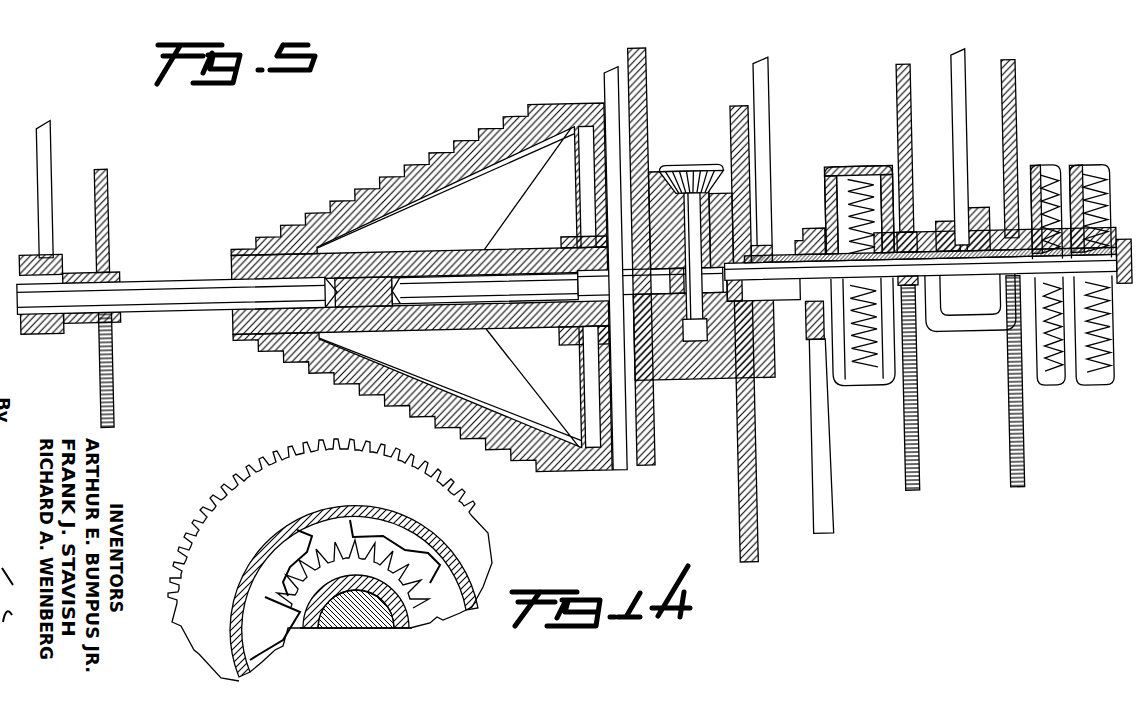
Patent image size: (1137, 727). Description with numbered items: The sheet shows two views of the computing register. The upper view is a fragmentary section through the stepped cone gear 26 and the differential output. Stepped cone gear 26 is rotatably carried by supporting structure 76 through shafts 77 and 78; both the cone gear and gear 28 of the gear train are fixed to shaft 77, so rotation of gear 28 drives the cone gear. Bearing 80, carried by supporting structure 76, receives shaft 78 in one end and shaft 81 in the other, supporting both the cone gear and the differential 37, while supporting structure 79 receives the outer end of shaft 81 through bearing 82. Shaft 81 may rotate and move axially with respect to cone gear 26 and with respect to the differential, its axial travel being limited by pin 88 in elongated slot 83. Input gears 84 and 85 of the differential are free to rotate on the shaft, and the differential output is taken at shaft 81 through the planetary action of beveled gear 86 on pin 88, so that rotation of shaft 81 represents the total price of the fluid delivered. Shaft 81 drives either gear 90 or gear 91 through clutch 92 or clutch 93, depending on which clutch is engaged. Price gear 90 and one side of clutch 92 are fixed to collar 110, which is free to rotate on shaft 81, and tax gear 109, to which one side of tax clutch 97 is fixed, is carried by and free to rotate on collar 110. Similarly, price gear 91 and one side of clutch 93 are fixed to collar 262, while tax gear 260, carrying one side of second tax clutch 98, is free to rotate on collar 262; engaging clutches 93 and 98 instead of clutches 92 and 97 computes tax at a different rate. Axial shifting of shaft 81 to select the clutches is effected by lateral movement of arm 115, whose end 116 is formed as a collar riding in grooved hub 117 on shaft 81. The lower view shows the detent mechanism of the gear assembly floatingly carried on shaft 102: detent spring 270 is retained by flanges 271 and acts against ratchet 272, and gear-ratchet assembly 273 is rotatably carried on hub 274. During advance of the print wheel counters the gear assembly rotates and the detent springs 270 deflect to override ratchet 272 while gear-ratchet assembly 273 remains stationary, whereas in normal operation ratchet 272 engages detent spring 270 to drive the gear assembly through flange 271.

In FIG. 5, the stepped cone gear 26 is at (258, 222).
In FIG. 5, the gear 28 is at (112, 375).
In FIG. 5, the differential 37 is at (678, 162).
In FIG. 5, the supporting structure 76 is at (608, 86).
In FIG. 5, the shaft 77 is at (182, 270).
In FIG. 5, the shaft 78 is at (513, 270).
In FIG. 5, the supporting structure 79 is at (956, 62).
In FIG. 5, the bearing 80 is at (576, 245).
In FIG. 5, the shaft 81 is at (1119, 250).
In FIG. 5, the bearing 82 is at (976, 222).
In FIG. 5, the elongated slot 83 is at (777, 262).
In FIG. 5, the input gear 84 is at (644, 128).
In FIG. 5, the input gear 85 is at (736, 117).
In FIG. 5, the beveled gear 86 is at (706, 166).
In FIG. 5, the pin 88 is at (693, 342).
In FIG. 5, the price gear 90 is at (899, 122).
In FIG. 5, the price gear 91 is at (1017, 119).
In FIG. 5, the clutch 92 is at (827, 171).
In FIG. 5, the clutch 93 is at (1102, 175).
In FIG. 5, the tax clutch 97 is at (866, 171).
In FIG. 5, the second tax clutch 98 is at (1043, 174).
In FIG. 5, the tax gear 109 is at (900, 236).
In FIG. 5, the collar 110 is at (935, 228).
In FIG. 5, the arm 115 is at (829, 483).
In FIG. 5, the end of arm 116 is at (812, 232).
In FIG. 5, the grooved hub 117 is at (806, 340).
In FIG. 5, the tax gear 260 is at (1013, 338).
In FIG. 5, the collar 262 is at (999, 232).
In FIG. 14, the shaft 102 is at (368, 596).
In FIG. 14, the detent spring 270 is at (393, 535).
In FIG. 14, the flanges 271 is at (296, 537).
In FIG. 14, the ratchet 272 is at (428, 553).
In FIG. 14, the gear-ratchet assembly 273 is at (303, 632).
In FIG. 14, the hub 274 is at (328, 634).